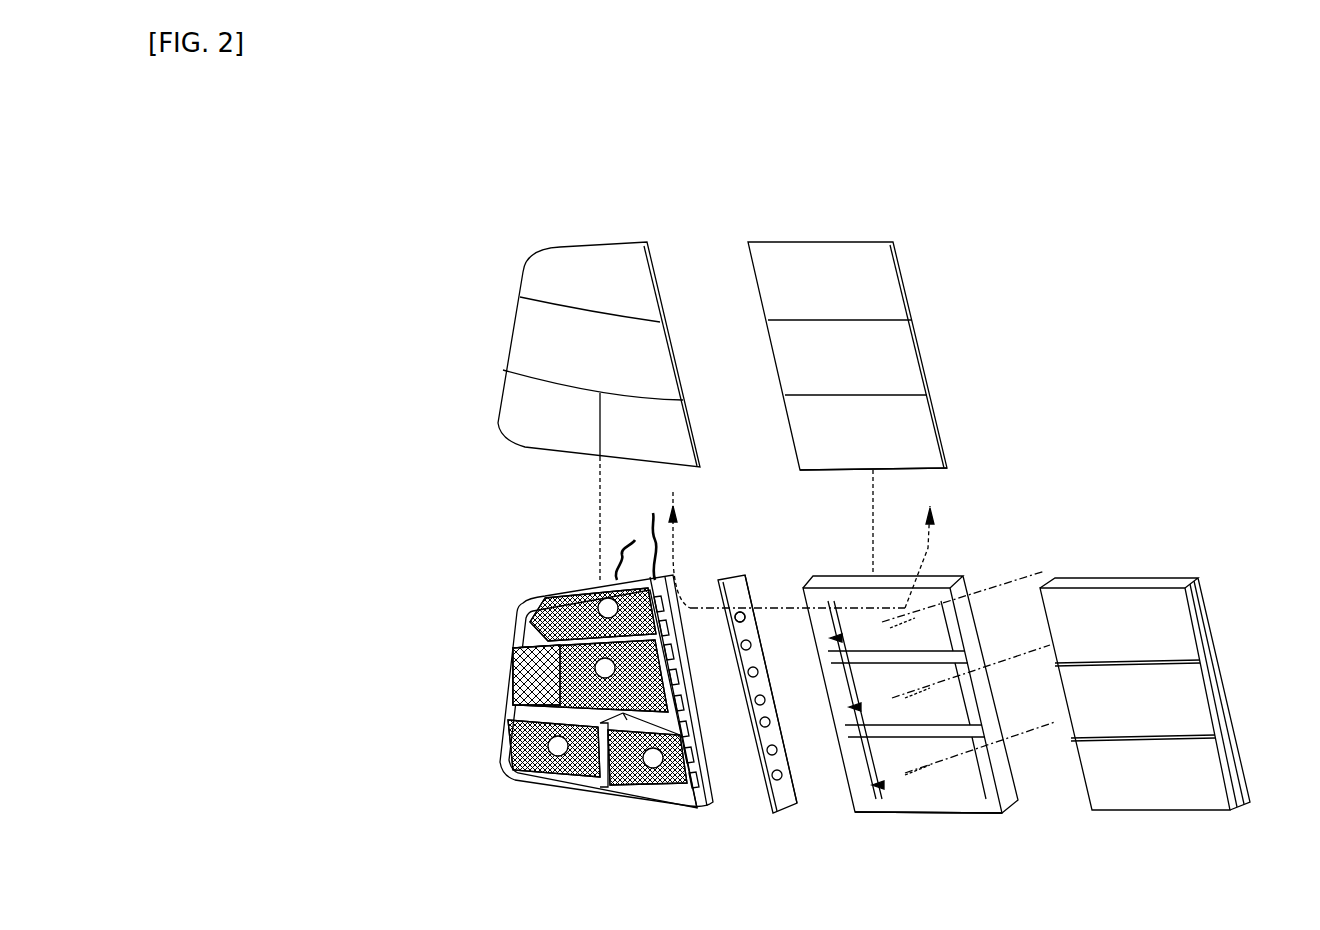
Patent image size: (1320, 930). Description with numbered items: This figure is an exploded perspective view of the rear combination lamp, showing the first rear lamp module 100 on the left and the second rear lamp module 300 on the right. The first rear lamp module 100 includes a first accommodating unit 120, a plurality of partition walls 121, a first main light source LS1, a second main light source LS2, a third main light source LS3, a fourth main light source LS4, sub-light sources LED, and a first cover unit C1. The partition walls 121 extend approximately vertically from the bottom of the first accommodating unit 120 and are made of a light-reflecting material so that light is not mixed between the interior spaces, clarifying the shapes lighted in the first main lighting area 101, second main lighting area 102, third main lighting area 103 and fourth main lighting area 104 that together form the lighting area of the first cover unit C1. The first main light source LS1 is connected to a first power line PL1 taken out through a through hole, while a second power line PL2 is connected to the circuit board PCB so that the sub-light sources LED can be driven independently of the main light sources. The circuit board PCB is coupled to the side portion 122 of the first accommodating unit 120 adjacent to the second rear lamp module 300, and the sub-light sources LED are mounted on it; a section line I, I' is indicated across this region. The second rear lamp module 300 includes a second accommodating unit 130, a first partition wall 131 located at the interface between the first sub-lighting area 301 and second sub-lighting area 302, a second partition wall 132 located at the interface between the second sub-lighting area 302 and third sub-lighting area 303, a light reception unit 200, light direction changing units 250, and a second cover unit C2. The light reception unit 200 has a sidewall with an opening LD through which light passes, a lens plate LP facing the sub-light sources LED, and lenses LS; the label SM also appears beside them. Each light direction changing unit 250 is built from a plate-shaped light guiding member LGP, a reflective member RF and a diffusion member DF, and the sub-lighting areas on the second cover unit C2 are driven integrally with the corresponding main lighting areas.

The first cover unit C1 is at (615, 242).
The second cover unit C2 is at (838, 242).
The first main lighting area 101 is at (587, 288).
The second main lighting area 102 is at (587, 363).
The third main lighting area 103 is at (529, 426).
The fourth main lighting area 104 is at (626, 438).
The first sub-lighting area 301 is at (814, 296).
The second sub-lighting area 302 is at (827, 371).
The third sub-lighting area 303 is at (841, 446).
The first rear lamp module 100 is at (576, 729).
The first accommodating unit 120 is at (525, 630).
The partition walls 121 is at (535, 618).
The side portion 122 is at (676, 580).
The first main light source LS1 is at (575, 585).
The second main light source LS2 is at (512, 657).
The third main light source LS3 is at (502, 737).
The fourth main light source LS4 is at (632, 745).
The first power line PL1 is at (637, 540).
The second power line PL2 is at (650, 520).
The section line I is at (787, 550).
The section line I' is at (923, 552).
The light reception unit 200 is at (758, 665).
The lens plate LP is at (733, 582).
The lenses LS is at (755, 598).
The substrate mount SM is at (798, 585).
The circuit board PCB is at (707, 788).
The sub-light sources LED is at (721, 797).
The second accommodating unit 130 is at (929, 682).
The first partition wall 131 is at (903, 620).
The second partition wall 132 is at (958, 735).
The opening LD is at (842, 638).
The second rear lamp module 300 is at (936, 820).
The light direction changing unit 250 is at (1145, 662).
The light guiding member LGP is at (1045, 570).
The reflective member RF is at (1140, 578).
The diffusion member DF is at (1115, 542).